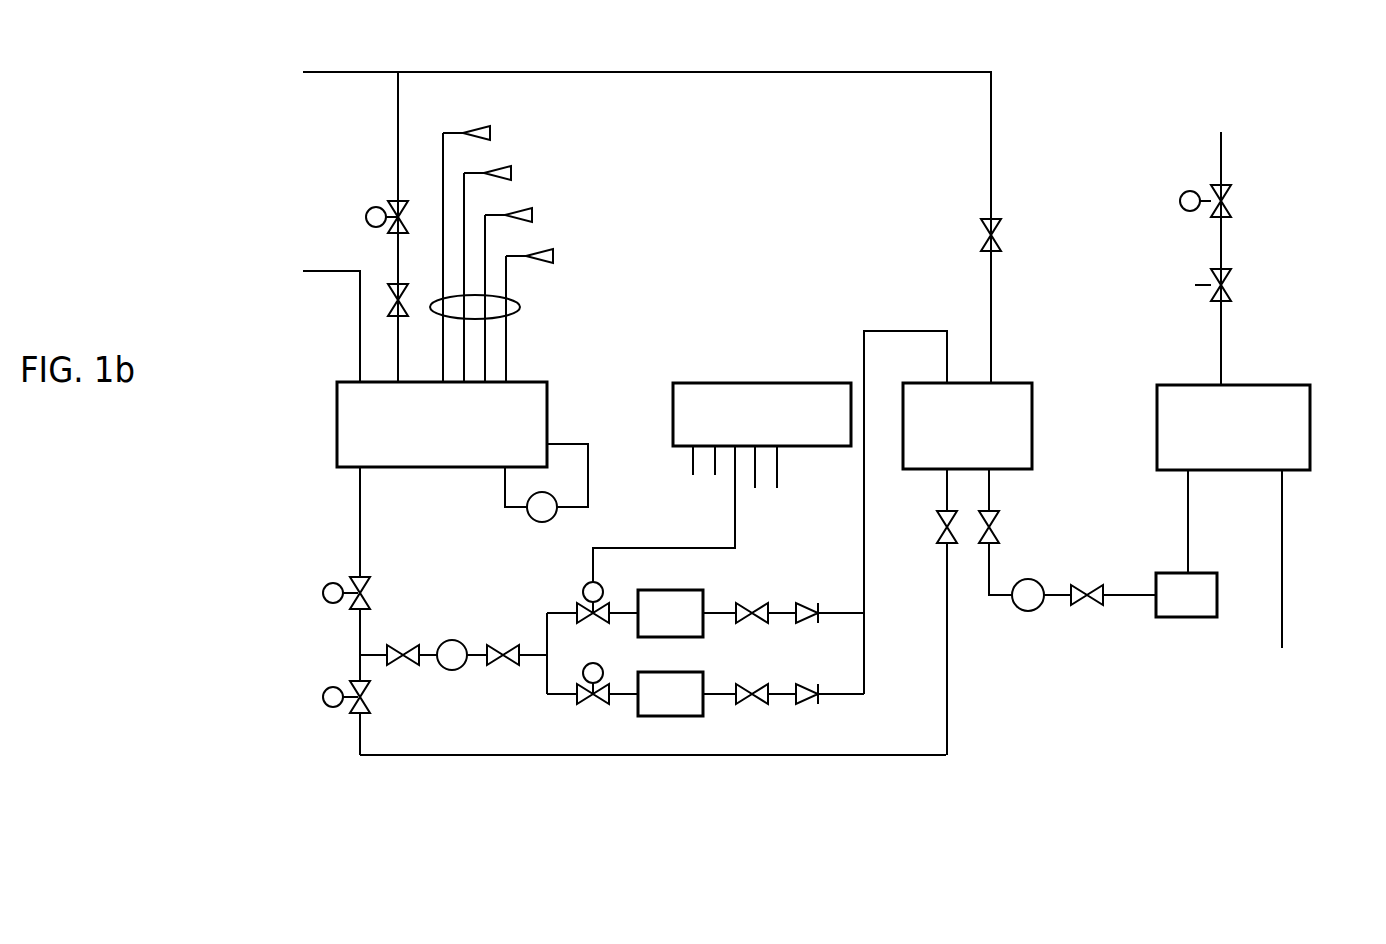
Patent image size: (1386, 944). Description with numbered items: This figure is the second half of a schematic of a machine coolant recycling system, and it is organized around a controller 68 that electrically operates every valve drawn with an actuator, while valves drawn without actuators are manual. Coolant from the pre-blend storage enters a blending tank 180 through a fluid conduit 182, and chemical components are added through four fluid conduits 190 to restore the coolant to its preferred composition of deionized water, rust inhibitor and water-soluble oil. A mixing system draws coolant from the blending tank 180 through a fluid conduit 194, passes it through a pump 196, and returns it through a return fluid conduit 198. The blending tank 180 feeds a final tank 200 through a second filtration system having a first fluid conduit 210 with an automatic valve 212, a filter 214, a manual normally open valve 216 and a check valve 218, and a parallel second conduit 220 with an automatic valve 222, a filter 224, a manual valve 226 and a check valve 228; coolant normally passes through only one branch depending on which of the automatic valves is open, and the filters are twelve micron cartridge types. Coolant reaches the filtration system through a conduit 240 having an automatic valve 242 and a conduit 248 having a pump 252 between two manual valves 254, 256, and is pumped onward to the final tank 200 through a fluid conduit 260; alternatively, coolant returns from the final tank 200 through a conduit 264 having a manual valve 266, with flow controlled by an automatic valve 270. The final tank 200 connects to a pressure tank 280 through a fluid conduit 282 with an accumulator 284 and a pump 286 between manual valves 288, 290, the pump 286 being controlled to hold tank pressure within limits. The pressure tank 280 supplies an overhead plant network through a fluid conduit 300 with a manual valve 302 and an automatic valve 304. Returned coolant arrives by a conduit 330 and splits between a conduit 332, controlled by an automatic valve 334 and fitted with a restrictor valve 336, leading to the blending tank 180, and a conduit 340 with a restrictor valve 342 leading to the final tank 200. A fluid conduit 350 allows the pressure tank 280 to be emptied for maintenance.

The controller 68 is at (770, 383).
The blending tank 180 is at (432, 467).
The fluid conduit 182 is at (307, 271).
The fluid conduits 190 is at (520, 307).
The fluid conduit 194 is at (510, 518).
The pump 196 is at (548, 522).
The return fluid conduit 198 is at (575, 444).
The final tank 200 is at (1032, 418).
The first fluid conduit 210 is at (712, 613).
The automatic valve 212 is at (585, 623).
The filter 214 is at (668, 637).
The valve 216 is at (746, 623).
The check valve 218 is at (808, 623).
The second conduit 220 is at (722, 704).
The automatic valve 222 is at (585, 704).
The filter 224 is at (665, 716).
The valve 226 is at (762, 704).
The check valve 228 is at (810, 704).
The conduit 240 is at (360, 520).
The automatic valve 242 is at (360, 597).
The conduit 248 is at (430, 662).
The pump 252 is at (452, 640).
The valve 254 is at (395, 666).
The valve 256 is at (505, 666).
The fluid conduit 260 is at (864, 509).
The conduit 264 is at (830, 755).
The valve 266 is at (940, 538).
The automatic valve 270 is at (340, 705).
The pressure tank 280 is at (1310, 422).
The fluid conduit 282 is at (1188, 523).
The accumulator 284 is at (1180, 617).
The pump 286 is at (1030, 611).
The valve 288 is at (1082, 605).
The valve 290 is at (994, 526).
The fluid conduit 300 is at (1221, 322).
The valve 302 is at (1226, 289).
The automatic valve 304 is at (1226, 205).
The conduit 330 is at (355, 72).
The conduit 332 is at (398, 138).
The automatic valve 334 is at (388, 210).
The restrictor valve 336 is at (391, 288).
The conduit 340 is at (660, 72).
The restrictor valve 342 is at (991, 226).
The fluid conduit 350 is at (1282, 560).